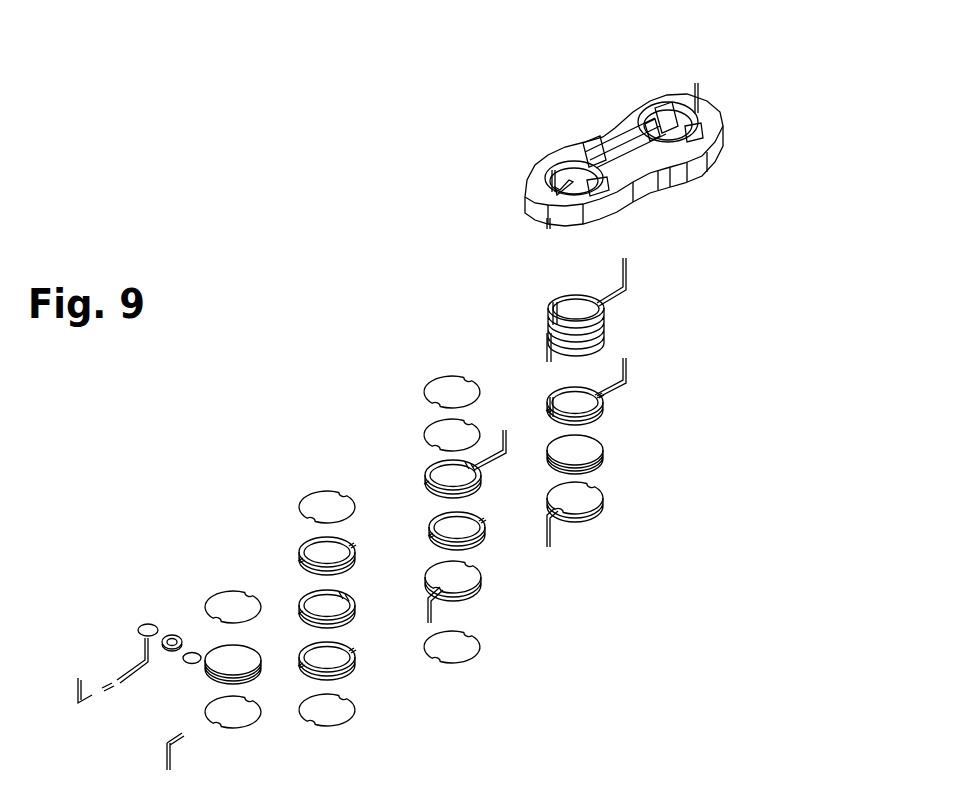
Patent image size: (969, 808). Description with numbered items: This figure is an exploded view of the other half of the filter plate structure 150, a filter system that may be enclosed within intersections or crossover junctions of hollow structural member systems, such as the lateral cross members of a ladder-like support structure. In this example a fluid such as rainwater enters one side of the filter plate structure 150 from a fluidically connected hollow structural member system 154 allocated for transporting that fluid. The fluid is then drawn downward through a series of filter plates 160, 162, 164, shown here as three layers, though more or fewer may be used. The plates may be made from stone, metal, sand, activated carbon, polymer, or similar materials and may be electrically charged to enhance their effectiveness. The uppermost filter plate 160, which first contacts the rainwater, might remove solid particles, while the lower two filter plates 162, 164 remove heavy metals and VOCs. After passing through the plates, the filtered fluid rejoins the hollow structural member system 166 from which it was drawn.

The filter plate structure 150 is at (753, 83).
The hollow structural member system 154 is at (553, 174).
The hollow structural member system 166 is at (548, 360).
The filter plate 160 is at (604, 404).
The filter plate 162 is at (605, 450).
The filter plate 164 is at (605, 501).